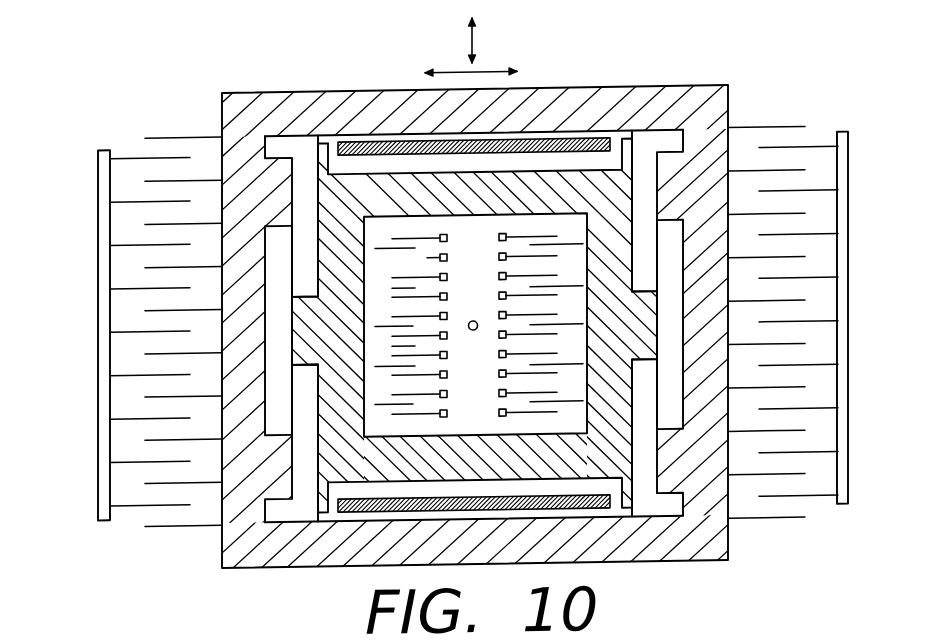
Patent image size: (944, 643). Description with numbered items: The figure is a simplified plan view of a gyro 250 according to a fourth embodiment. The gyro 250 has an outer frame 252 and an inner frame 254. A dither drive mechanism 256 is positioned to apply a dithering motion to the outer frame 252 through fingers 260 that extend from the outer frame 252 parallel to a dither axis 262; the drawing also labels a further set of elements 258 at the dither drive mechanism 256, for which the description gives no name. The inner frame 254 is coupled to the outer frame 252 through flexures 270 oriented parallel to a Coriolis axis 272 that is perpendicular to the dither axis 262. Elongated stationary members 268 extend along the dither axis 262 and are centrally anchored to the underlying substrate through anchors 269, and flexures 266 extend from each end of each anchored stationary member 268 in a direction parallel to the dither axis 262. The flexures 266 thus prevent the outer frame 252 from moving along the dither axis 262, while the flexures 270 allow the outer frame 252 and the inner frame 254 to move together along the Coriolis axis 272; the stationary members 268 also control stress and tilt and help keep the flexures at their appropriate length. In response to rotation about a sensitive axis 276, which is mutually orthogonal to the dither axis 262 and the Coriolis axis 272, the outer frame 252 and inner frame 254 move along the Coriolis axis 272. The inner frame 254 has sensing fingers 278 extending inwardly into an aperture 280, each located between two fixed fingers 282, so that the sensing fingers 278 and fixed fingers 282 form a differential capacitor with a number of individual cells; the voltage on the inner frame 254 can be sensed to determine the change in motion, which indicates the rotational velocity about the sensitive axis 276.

The gyro 250 is at (472, 321).
The outer frame 252 is at (668, 93).
The inner frame 254 is at (471, 196).
The dither drive mechanism 256 is at (98, 148).
The leads 258 is at (125, 157).
The fingers 260 is at (193, 179).
The dither axis 262 is at (477, 73).
The flexures 266 is at (337, 145).
The elongated stationary members 268 is at (372, 144).
The anchors 269 is at (465, 143).
The flexures 270 is at (292, 263).
The Coriolis axis 272 is at (468, 45).
The sensitive axis 276 is at (472, 334).
The sensing fingers 278 is at (568, 249).
The aperture 280 is at (473, 317).
The fixed fingers 282 is at (418, 242).